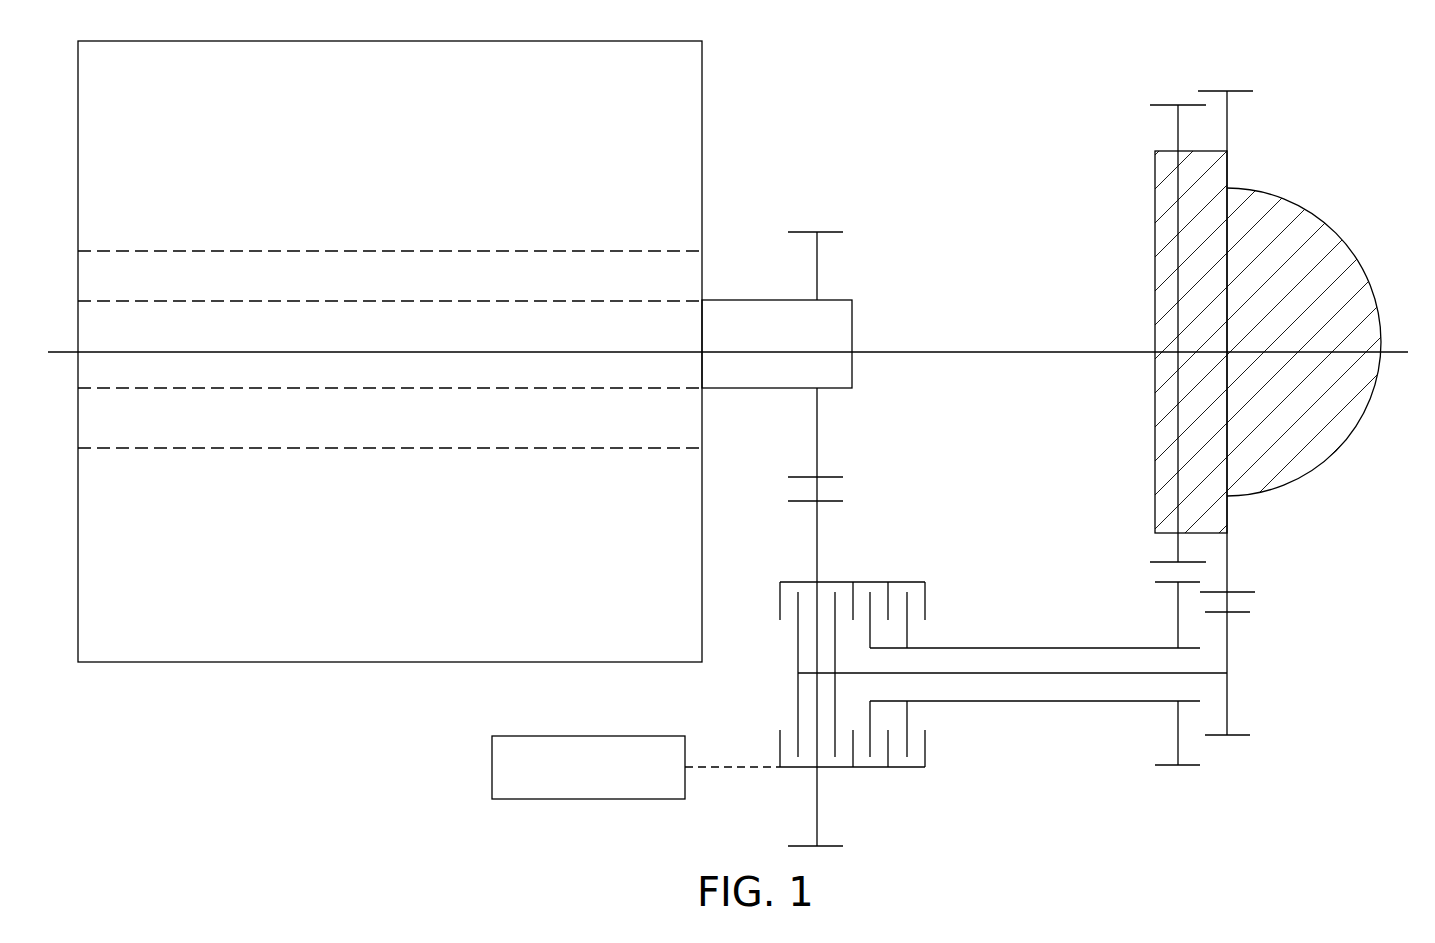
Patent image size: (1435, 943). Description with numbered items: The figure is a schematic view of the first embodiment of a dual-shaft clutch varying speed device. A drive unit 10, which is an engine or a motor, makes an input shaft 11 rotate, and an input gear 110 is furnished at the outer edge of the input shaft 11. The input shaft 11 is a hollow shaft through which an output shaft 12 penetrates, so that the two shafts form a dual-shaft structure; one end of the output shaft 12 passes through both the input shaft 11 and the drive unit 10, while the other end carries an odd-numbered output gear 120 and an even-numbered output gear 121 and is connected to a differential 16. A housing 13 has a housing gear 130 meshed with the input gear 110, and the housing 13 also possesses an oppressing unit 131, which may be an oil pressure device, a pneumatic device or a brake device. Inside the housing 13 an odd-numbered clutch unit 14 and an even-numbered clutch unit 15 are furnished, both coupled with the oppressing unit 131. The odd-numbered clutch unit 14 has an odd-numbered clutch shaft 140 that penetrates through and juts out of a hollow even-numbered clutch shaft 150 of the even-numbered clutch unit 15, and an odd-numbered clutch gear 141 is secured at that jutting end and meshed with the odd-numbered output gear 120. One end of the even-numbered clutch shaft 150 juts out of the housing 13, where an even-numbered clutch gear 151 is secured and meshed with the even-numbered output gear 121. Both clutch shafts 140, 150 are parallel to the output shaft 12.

The drive unit 10 is at (177, 662).
The input shaft 11 is at (724, 300).
The input gear 110 is at (817, 272).
The output shaft 12 is at (950, 352).
The housing 13 is at (840, 582).
The housing gear 130 is at (838, 501).
The oppressing unit 131 is at (492, 762).
The odd-numbered clutch unit 14 is at (798, 704).
The odd-numbered clutch shaft 140 is at (960, 673).
The odd-numbered clutch gear 141 is at (1237, 735).
The even-numbered clutch unit 15 is at (907, 631).
The even-numbered clutch shaft 150 is at (1013, 648).
The even-numbered clutch gear 151 is at (1178, 614).
The differential 16 is at (1340, 265).
The odd-numbered output gear 120 is at (1229, 121).
The even-numbered output gear 121 is at (1176, 122).